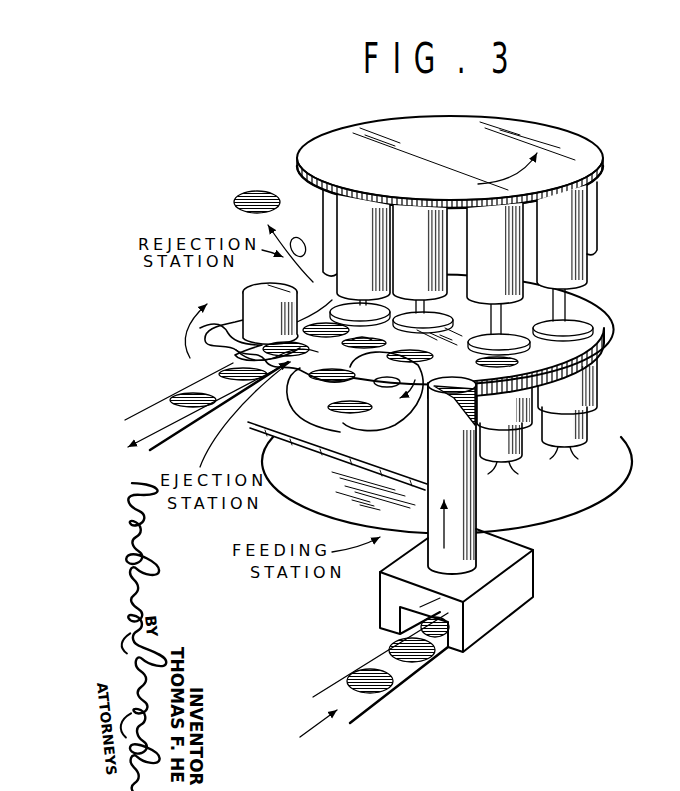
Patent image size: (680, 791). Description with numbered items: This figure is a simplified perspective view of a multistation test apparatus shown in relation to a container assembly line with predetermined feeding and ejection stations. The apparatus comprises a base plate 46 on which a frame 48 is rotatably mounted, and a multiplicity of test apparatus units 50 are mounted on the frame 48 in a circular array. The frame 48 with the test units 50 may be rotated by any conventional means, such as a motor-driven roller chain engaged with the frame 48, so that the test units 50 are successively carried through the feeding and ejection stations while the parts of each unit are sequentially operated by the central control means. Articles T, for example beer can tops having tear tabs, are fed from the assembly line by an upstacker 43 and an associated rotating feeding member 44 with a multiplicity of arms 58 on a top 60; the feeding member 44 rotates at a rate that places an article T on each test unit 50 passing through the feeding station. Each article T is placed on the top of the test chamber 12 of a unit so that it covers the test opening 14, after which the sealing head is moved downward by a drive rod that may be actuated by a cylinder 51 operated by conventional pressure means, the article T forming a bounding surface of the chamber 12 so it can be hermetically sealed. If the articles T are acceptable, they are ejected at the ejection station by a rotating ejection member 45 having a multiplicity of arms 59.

The test chamber 12 is at (600, 389).
The test opening 14 is at (380, 345).
The upstacker 43 is at (477, 503).
The rotating feeding member 44 is at (384, 412).
The rotating ejection member 45 is at (197, 340).
The base plate 46 is at (603, 424).
The frame 48 is at (590, 331).
The test apparatus units 50 is at (590, 262).
The cylinder 51 is at (405, 222).
The arms 58 is at (275, 440).
The arms 59 is at (224, 325).
The top 60 is at (320, 440).
The articles T is at (235, 196).